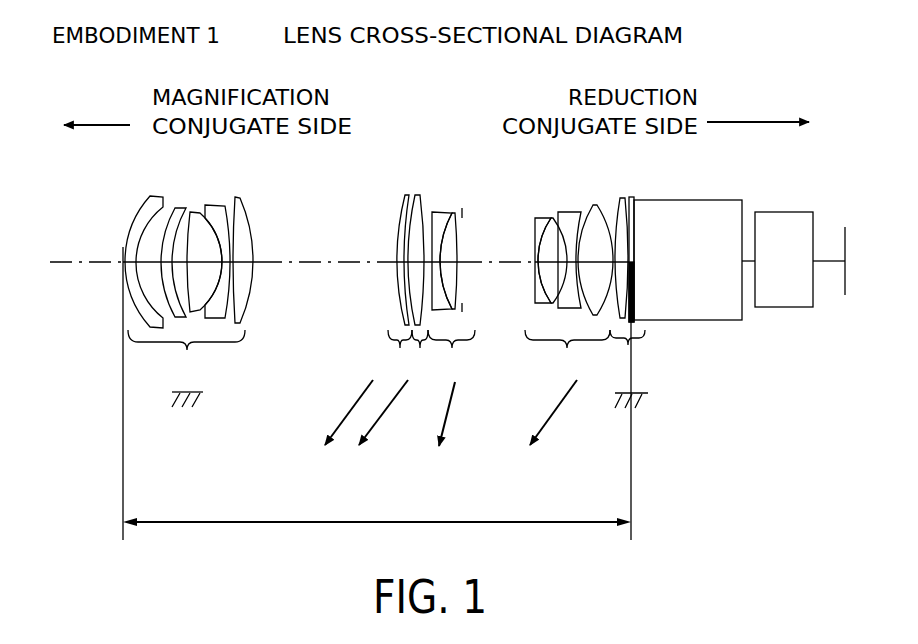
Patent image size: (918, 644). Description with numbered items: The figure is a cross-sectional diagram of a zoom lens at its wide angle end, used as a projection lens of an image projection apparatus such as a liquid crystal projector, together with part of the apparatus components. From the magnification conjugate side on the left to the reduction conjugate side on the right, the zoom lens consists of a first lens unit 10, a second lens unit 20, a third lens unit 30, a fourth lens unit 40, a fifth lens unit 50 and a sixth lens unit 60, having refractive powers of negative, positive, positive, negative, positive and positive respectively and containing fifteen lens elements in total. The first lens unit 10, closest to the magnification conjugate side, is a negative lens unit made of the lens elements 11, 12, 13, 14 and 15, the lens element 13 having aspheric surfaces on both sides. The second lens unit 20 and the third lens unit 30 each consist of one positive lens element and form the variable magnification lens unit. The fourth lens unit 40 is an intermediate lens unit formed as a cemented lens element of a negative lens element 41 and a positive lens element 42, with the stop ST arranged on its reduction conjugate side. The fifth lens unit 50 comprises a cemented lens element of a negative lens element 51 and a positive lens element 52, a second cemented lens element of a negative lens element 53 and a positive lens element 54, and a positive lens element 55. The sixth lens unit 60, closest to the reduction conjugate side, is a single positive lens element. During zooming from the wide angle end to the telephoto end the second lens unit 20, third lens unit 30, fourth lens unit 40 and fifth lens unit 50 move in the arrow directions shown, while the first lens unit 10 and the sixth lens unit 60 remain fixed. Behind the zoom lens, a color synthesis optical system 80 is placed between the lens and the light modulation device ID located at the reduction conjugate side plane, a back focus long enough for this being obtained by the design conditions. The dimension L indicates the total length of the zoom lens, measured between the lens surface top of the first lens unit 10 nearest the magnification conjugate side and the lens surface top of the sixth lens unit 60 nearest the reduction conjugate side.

The first lens unit 10 is at (188, 392).
The lens element 11 is at (147, 202).
The lens element 12 is at (178, 207).
The lens element 13 is at (197, 212).
The lens element 14 is at (217, 204).
The lens element 15 is at (240, 207).
The second lens unit 20 is at (394, 284).
The third lens unit 30 is at (417, 284).
The fourth lens unit 40 is at (430, 263).
The negative lens element 41 is at (433, 212).
The positive lens element 42 is at (452, 222).
The stop ST is at (461, 207).
The fifth lens unit 50 is at (574, 263).
The negative lens element 51 is at (538, 222).
The positive lens element 52 is at (553, 222).
The negative lens element 53 is at (573, 223).
The positive lens element 54 is at (580, 222).
The positive lens element 55 is at (600, 215).
The sixth lens unit 60 is at (629, 302).
The color synthesis optical system 80 is at (780, 295).
The light modulation device ID is at (845, 298).
The total length of the zoom lens L is at (377, 393).